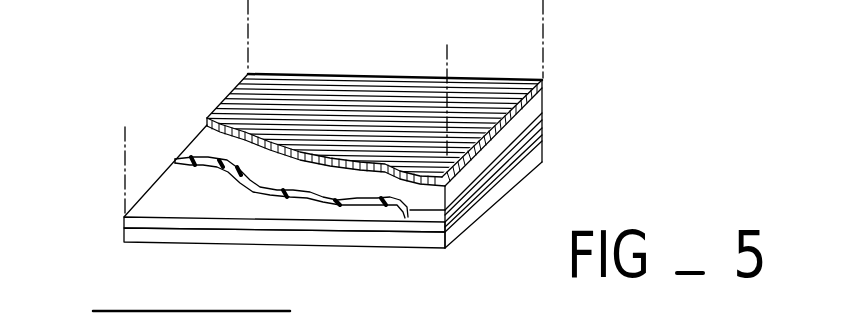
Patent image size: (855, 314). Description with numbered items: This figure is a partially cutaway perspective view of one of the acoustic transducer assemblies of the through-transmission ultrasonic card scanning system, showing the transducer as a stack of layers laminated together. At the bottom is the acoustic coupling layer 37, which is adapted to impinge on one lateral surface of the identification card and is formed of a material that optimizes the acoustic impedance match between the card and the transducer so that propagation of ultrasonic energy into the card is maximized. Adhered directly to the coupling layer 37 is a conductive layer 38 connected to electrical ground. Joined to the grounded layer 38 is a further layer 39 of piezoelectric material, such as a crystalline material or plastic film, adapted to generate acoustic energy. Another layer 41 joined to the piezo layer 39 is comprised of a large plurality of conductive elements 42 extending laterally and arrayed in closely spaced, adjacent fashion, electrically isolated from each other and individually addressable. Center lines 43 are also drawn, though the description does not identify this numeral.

The acoustic coupling layer 37 is at (133, 238).
The conductive layer 38 is at (140, 223).
The piezoelectric layer 39 is at (205, 162).
The conductive element layer 41 is at (208, 119).
The conductive elements 42 is at (247, 79).
The center line 43 is at (250, 37).